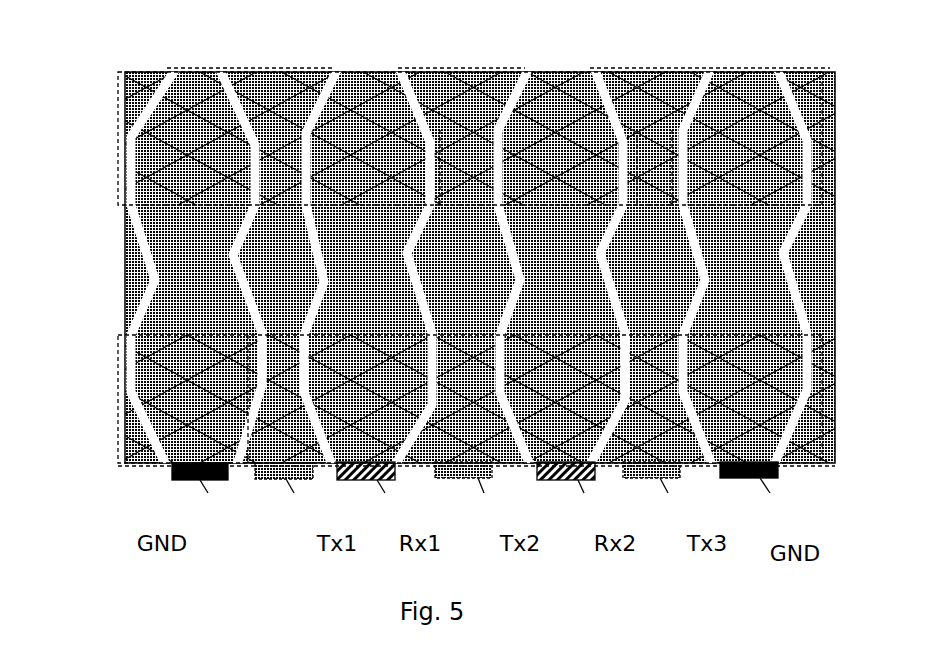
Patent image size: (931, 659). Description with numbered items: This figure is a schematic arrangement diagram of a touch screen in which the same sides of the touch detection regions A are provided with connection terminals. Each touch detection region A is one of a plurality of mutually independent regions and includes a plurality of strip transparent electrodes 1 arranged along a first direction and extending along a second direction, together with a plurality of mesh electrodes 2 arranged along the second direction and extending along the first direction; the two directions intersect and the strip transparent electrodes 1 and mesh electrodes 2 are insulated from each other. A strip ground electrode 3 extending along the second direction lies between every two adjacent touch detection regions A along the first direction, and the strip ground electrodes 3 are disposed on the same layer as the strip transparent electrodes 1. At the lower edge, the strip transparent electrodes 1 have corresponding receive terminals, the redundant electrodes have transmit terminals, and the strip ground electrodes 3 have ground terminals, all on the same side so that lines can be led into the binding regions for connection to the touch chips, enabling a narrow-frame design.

The strip transparent electrode 1 is at (273, 68).
The mesh electrode 2 is at (120, 133).
The strip ground electrode 3 is at (195, 68).
The touch detection region A is at (125, 290).